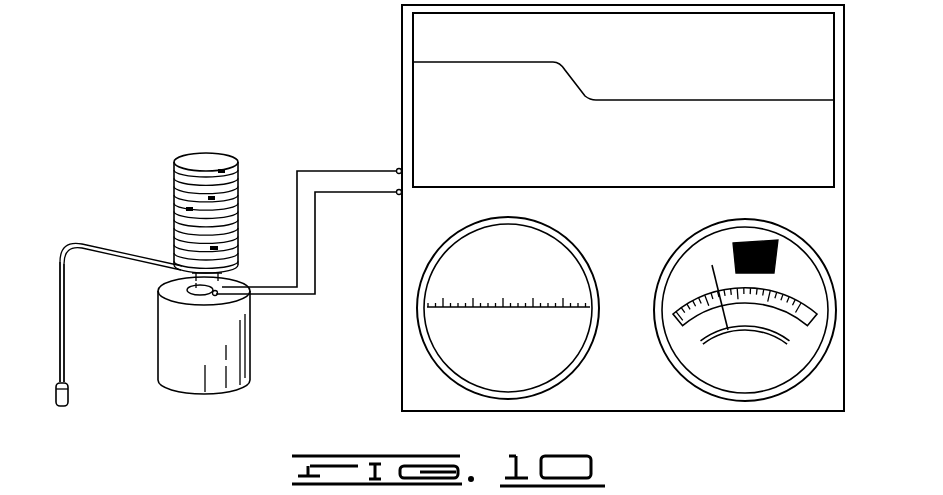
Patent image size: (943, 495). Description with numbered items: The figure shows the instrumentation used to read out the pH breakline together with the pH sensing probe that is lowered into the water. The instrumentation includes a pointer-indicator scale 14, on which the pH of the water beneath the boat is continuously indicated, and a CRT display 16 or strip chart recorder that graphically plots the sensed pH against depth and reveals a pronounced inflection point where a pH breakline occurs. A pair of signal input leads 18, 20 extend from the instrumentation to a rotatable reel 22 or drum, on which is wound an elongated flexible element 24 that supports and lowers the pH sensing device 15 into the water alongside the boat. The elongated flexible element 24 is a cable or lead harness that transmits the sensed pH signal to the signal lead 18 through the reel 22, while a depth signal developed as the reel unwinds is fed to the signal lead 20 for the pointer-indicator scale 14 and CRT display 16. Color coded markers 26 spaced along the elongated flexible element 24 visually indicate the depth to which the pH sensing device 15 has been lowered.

The pointer-indicator scale 14 is at (803, 277).
The pH sensing device 15 is at (69, 396).
The CRT display 16 is at (803, 58).
The signal input lead 18 is at (349, 170).
The signal input lead 20 is at (337, 194).
The rotatable reel 22 is at (207, 153).
The elongated flexible element 24 is at (108, 246).
The color coded markers 26 is at (58, 270).